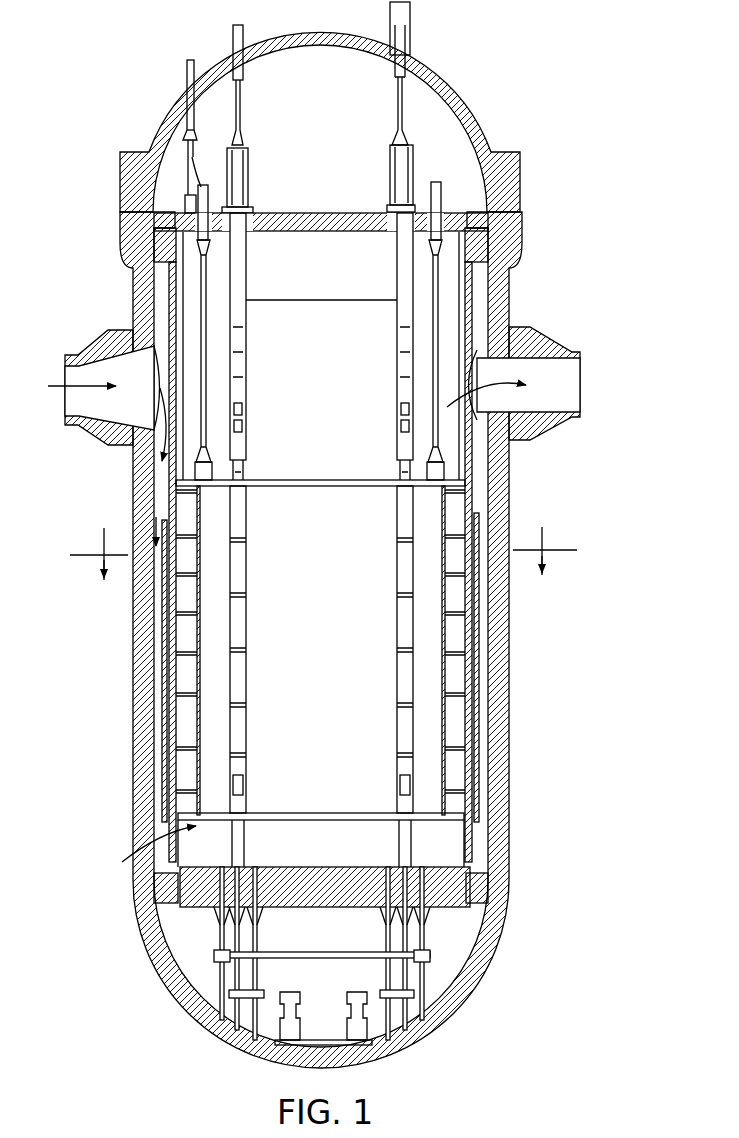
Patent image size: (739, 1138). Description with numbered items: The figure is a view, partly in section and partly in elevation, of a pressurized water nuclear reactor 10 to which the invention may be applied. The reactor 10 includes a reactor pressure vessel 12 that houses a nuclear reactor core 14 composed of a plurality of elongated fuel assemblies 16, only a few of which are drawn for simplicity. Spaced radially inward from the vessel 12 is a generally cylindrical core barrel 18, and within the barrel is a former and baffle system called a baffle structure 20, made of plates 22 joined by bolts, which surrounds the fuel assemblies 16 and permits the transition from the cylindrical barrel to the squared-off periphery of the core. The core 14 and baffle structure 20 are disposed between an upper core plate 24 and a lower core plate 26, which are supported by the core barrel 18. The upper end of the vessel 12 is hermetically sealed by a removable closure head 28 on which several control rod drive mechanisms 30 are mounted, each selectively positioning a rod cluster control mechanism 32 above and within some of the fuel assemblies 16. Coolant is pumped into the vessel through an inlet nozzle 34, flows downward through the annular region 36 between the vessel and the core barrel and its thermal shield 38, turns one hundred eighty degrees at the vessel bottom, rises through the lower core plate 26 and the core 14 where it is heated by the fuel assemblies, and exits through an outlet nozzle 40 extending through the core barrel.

The pressurized water nuclear reactor 10 is at (339, 535).
The reactor pressure vessel 12 is at (510, 272).
The nuclear reactor core 14 is at (138, 858).
The fuel assemblies 16 is at (397, 674).
The core barrel 18 is at (165, 467).
The baffle structure 20 is at (188, 723).
The plates 22 is at (192, 672).
The upper core plate 24 is at (296, 480).
The lower core plate 26 is at (317, 820).
The closure head 28 is at (456, 94).
The control rod drive mechanisms 30 is at (385, 178).
The rod cluster control mechanism 32 is at (248, 468).
The inlet nozzles 34 is at (100, 330).
The annular region 36 is at (158, 586).
The thermal shield 38 is at (168, 608).
The outlet nozzles 40 is at (540, 330).